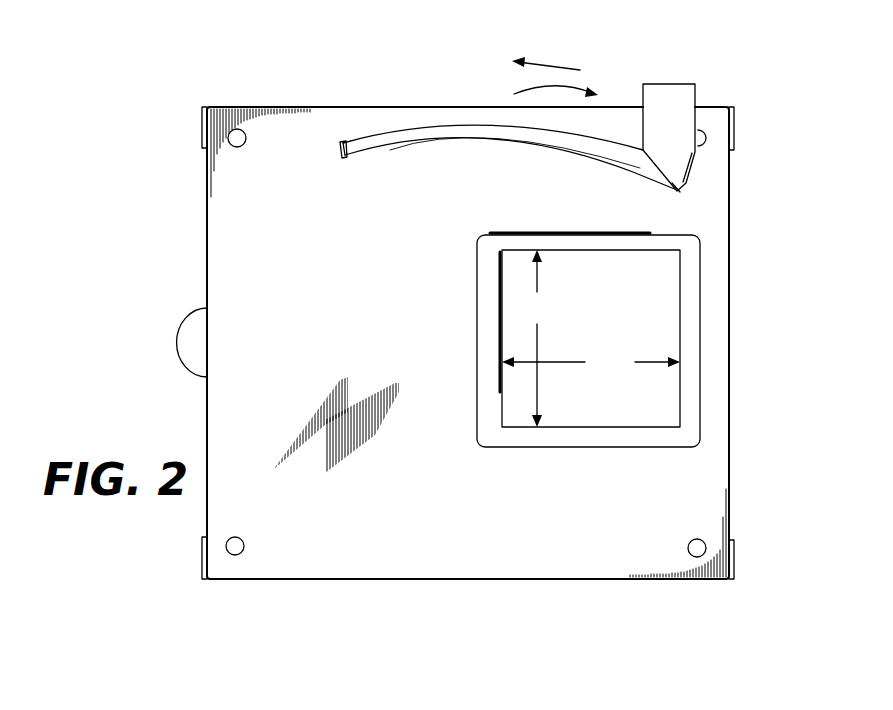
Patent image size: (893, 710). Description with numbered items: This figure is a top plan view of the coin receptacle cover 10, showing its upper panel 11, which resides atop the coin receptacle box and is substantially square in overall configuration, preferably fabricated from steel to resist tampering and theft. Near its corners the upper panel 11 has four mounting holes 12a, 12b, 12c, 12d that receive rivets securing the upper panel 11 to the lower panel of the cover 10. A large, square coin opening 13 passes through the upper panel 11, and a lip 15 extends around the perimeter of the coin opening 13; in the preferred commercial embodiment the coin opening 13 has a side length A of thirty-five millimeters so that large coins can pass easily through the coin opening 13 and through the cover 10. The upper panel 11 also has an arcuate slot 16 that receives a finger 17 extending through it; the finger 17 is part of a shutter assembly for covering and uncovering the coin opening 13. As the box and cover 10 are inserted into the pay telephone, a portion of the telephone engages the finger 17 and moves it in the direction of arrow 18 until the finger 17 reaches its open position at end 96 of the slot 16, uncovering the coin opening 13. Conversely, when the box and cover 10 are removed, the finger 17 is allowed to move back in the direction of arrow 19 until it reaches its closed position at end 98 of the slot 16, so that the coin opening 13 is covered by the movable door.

The cover 10 is at (450, 80).
The upper panel 11 is at (333, 265).
The mounting hole 12a is at (237, 129).
The mounting hole 12b is at (236, 555).
The mounting hole 12c is at (697, 557).
The mounting hole 12d is at (703, 132).
The coin opening 13 is at (680, 303).
The lip 15 is at (483, 325).
The arcuate slot 16 is at (377, 137).
The finger 17 is at (668, 97).
The direction arrow 18 is at (551, 63).
The direction arrow 19 is at (543, 93).
The end of slot 96 is at (334, 153).
The end of slot 98 is at (690, 194).